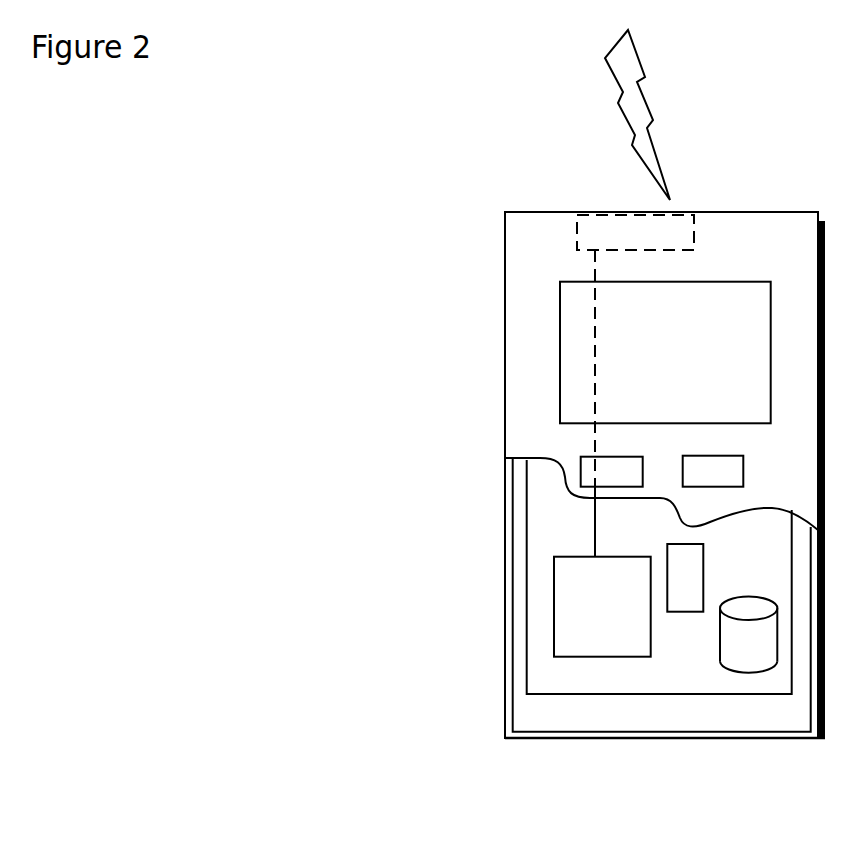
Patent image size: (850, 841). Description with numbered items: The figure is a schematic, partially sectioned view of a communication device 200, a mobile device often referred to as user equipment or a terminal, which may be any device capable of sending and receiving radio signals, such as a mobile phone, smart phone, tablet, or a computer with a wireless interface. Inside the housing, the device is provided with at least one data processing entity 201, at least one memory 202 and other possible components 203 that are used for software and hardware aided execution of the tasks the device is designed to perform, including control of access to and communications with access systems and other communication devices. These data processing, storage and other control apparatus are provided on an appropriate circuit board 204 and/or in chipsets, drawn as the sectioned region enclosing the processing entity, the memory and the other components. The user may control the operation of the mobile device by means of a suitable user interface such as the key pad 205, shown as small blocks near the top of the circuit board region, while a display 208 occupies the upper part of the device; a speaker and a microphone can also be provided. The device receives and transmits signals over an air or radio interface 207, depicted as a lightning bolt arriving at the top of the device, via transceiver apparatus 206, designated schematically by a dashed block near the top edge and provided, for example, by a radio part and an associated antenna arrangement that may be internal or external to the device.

The communication device 200 is at (508, 255).
The data processing entity 201 is at (560, 588).
The memory 202 is at (743, 648).
The other possible components 203 is at (685, 562).
The circuit board 204 is at (553, 677).
The key pad 205 is at (580, 468).
The transceiver apparatus 206 is at (683, 227).
The air or radio interface 207 is at (669, 142).
The display 208 is at (578, 338).